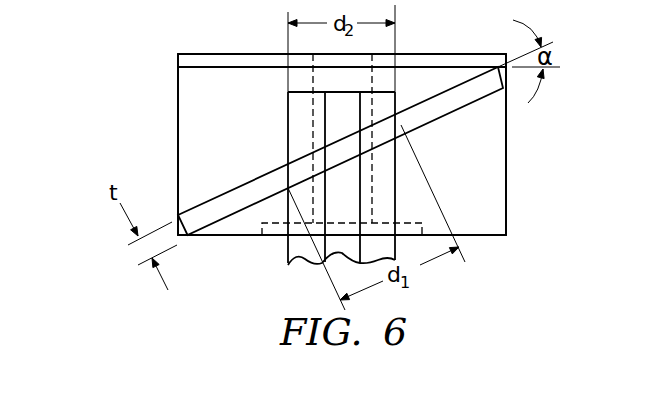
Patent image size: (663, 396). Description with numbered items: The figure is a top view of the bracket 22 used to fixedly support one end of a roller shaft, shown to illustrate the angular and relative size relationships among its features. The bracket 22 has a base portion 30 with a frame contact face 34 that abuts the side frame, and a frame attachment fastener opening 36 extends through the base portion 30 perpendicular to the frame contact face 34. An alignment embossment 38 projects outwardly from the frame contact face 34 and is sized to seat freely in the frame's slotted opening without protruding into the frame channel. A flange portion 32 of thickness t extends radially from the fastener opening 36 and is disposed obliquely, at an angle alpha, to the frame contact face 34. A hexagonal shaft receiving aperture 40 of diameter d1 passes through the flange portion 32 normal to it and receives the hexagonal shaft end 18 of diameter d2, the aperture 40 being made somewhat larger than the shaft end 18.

The bracket 22 is at (125, 75).
The base portion 30 is at (492, 192).
The frame contact face 34 is at (213, 62).
The alignment embossment 38 is at (463, 52).
The frame attachment fastener opening 36 is at (370, 76).
The shaft end 18 is at (297, 250).
The flange portion 32 is at (229, 218).
The shaft receiving aperture 40 is at (289, 188).